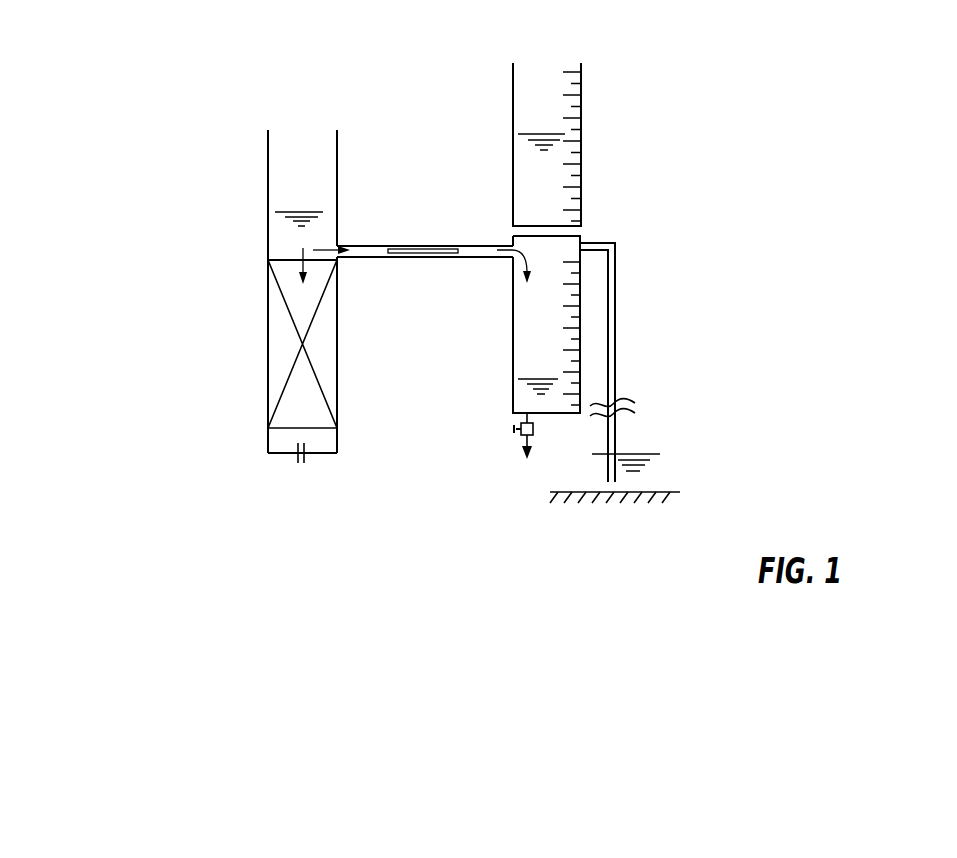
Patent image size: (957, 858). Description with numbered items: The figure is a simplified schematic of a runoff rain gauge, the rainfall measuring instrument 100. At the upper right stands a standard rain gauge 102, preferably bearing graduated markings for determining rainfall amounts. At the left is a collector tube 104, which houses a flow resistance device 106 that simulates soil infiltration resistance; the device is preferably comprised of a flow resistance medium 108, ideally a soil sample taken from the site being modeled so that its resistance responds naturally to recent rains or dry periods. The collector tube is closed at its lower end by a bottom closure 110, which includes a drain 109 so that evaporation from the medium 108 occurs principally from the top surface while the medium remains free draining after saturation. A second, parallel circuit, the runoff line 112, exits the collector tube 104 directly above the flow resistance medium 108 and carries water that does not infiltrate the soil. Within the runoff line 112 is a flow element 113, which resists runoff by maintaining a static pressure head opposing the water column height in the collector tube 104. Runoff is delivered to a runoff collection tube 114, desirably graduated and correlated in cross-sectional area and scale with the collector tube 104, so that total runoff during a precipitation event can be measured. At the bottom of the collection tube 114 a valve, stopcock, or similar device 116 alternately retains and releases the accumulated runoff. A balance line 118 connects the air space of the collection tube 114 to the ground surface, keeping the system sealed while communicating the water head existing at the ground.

The rainfall measuring instrument 100 is at (185, 58).
The standard rain gauge 102 is at (582, 112).
The collector tube 104 is at (267, 173).
The flow resistance device 106 is at (285, 258).
The flow resistance medium 108 is at (285, 352).
The drain 109 is at (298, 465).
The bottom closure 110 is at (325, 457).
The runoff line 112 is at (502, 240).
The flow element 113 is at (412, 248).
The runoff collection tube 114 is at (512, 353).
The valve 116 is at (508, 433).
The balance line 118 is at (618, 277).